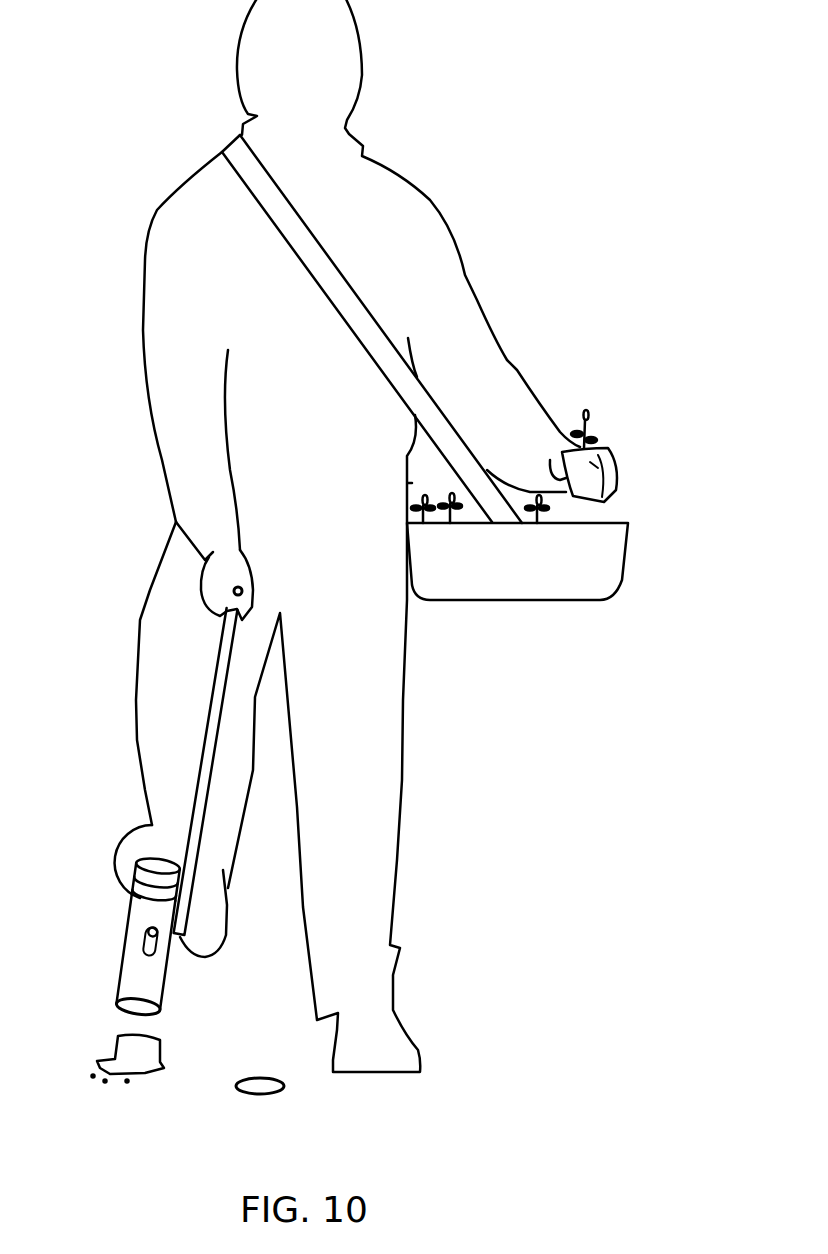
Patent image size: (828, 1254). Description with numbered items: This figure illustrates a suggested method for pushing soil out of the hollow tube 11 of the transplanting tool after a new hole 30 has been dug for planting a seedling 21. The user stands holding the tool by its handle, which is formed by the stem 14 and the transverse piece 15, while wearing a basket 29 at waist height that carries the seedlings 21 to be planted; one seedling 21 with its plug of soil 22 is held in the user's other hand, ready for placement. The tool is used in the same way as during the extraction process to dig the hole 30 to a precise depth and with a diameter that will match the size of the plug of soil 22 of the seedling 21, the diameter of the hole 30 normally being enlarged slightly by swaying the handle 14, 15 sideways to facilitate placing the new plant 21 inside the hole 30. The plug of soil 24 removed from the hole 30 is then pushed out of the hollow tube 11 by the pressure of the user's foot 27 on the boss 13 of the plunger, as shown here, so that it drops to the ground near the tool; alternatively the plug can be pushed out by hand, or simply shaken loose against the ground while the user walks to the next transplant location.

The hollow tube 11 is at (120, 982).
The boss 13 is at (138, 877).
The stem 14 is at (218, 655).
The transverse piece 15 is at (242, 589).
The seedling 21 is at (592, 434).
The plug of soil 22 is at (605, 452).
The plug of soil 24 is at (143, 1071).
The user's foot 27 is at (120, 848).
The basket 29 is at (622, 563).
The hole 30 is at (277, 1093).